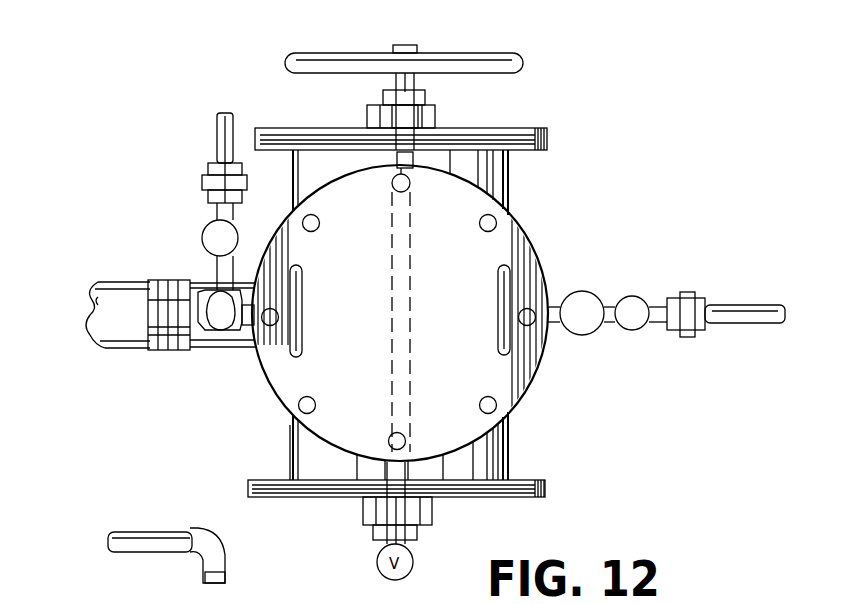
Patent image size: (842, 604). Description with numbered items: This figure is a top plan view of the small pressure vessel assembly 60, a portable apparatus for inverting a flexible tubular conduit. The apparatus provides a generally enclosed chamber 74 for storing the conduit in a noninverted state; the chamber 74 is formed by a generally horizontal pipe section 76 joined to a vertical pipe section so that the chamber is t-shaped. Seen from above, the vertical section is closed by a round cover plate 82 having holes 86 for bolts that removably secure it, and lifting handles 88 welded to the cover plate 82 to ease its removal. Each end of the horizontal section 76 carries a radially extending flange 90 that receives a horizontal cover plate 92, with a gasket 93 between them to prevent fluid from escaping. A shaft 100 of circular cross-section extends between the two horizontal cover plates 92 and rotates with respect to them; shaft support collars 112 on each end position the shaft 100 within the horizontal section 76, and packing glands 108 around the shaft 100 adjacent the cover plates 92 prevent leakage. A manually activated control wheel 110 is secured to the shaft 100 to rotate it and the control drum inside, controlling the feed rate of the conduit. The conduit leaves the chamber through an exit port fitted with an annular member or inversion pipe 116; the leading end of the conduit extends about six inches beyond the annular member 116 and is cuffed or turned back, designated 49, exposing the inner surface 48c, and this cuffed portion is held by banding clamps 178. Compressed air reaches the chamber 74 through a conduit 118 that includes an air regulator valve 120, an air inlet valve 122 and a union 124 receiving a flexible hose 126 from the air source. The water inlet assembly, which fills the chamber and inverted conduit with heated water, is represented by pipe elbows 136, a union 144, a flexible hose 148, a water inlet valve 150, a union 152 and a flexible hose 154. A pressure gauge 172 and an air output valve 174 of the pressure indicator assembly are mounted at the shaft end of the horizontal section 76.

The inner surface 48c is at (118, 300).
The cuffed or turned back portion 49 is at (88, 312).
The small pressure vessel assembly 60 is at (600, 216).
The chamber 74 is at (290, 454).
The horizontal pipe section 76 is at (503, 462).
The cover plate 82 is at (458, 408).
The holes 86 is at (492, 224).
The lifting handles 88 is at (302, 322).
The radially extending flanges 90 is at (546, 146).
The horizontal cover plates 92 is at (542, 128).
The gasket 93 is at (548, 138).
The shaft 100 is at (412, 48).
The packing glands 108 is at (437, 118).
The control wheel 110 is at (508, 56).
The shaft support collars 112 is at (424, 95).
The annular member 116 is at (208, 341).
The conduit 118 is at (652, 324).
The air regulator valve 120 is at (580, 291).
The air inlet valve 122 is at (632, 296).
The union 124 is at (690, 292).
The flexible hose 126 is at (752, 306).
The pipe elbows 136 is at (225, 555).
The union 144 is at (206, 290).
The flexible hose 148 is at (140, 540).
The water inlet valve 150 is at (204, 236).
The union 152 is at (205, 183).
The flexible hose 154 is at (218, 135).
The pressure gauge 172 is at (396, 158).
The air output valve 174 is at (385, 103).
The banding clamps 178 is at (158, 352).